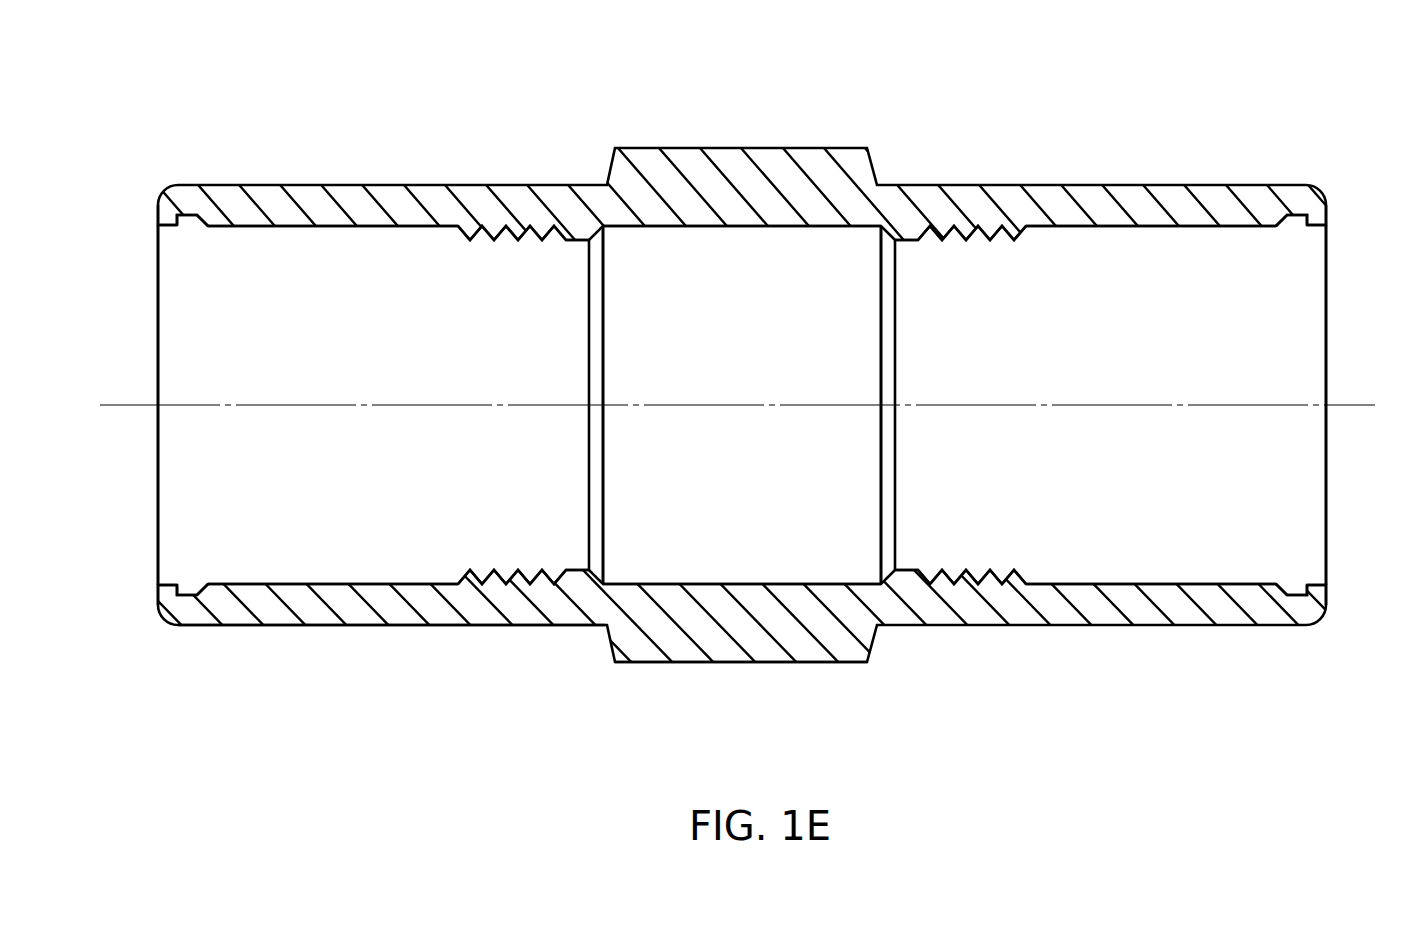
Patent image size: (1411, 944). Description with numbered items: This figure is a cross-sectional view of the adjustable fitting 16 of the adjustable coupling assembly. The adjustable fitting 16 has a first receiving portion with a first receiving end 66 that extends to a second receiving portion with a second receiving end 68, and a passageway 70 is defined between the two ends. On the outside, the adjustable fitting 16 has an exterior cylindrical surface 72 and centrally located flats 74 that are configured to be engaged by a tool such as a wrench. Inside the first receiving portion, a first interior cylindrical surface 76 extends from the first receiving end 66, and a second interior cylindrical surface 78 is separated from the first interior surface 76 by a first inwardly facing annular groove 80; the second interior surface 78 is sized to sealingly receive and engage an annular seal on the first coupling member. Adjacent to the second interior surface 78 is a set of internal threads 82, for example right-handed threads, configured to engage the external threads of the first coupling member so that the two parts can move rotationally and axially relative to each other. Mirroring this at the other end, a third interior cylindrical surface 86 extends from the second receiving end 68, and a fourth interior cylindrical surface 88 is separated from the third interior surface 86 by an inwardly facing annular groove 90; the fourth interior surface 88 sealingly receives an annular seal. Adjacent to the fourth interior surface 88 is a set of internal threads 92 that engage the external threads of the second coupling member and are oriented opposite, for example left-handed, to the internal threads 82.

The adjustable fitting 16 is at (874, 103).
The first receiving end 66 is at (158, 592).
The second receiving end 68 is at (1326, 592).
The passageway 70 is at (729, 330).
The exterior cylindrical surface 72 is at (412, 627).
The centrally located flats 74 is at (745, 664).
The first interior cylindrical surface 76 is at (165, 228).
The second interior cylindrical surface 78 is at (300, 226).
The first inwardly facing annular groove 80 is at (187, 223).
The internal threads 82 is at (518, 240).
The third interior cylindrical surface 86 is at (1317, 228).
The fourth interior cylindrical surface 88 is at (1108, 226).
The inwardly facing annular groove 90 is at (1293, 222).
The internal threads 92 is at (966, 240).